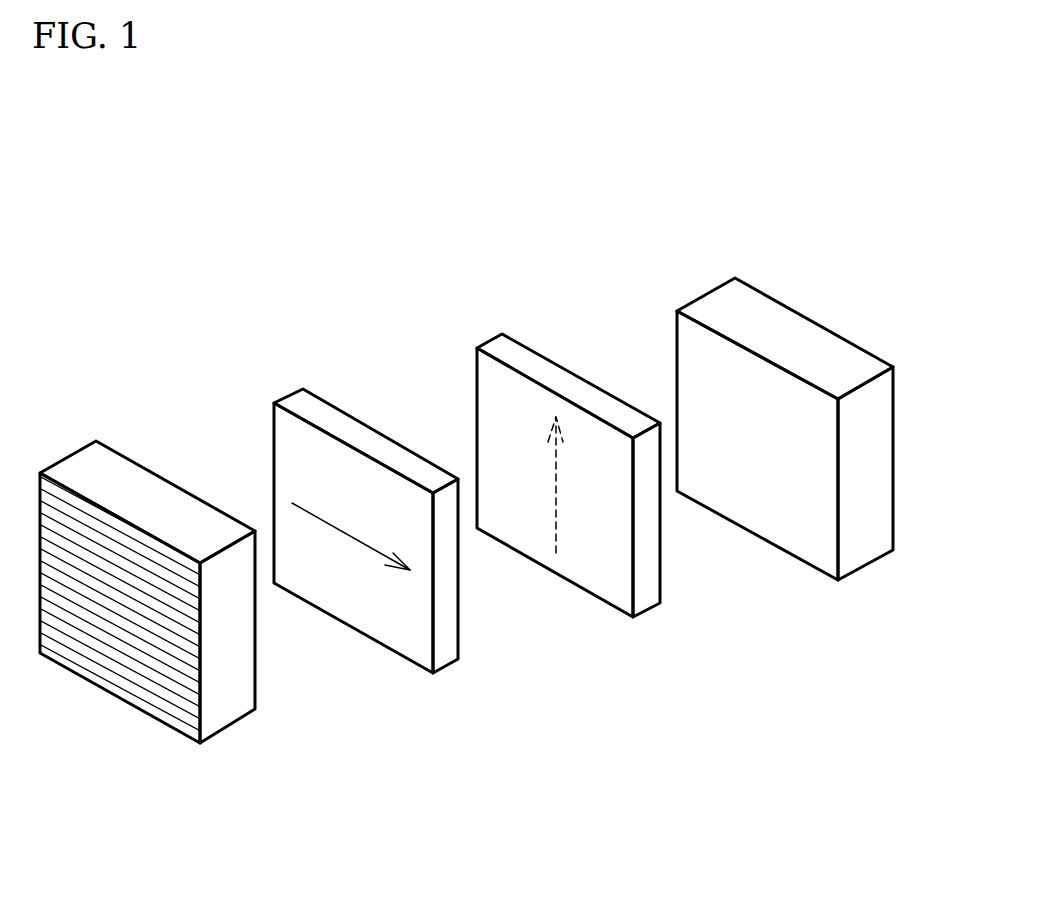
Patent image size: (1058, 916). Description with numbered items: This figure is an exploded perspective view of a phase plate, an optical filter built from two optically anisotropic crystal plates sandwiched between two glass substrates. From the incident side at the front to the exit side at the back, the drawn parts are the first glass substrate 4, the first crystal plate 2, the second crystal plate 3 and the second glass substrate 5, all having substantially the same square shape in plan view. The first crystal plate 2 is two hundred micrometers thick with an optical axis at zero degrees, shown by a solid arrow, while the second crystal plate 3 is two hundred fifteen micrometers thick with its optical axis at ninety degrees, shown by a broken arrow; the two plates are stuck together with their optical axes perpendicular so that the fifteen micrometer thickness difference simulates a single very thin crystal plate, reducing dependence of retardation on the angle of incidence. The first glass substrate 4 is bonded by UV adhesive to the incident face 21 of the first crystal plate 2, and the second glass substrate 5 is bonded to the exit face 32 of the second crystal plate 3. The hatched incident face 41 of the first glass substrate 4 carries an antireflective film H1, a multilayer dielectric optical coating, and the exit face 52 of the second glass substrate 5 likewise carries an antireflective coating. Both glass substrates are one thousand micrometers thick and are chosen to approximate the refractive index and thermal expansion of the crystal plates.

The first crystal plate 2 is at (390, 534).
The incident face 21 is at (297, 452).
The second crystal plate 3 is at (591, 465).
The exit face 32 is at (545, 358).
The first glass substrate 4 is at (142, 590).
The incident face 41 is at (130, 583).
The second glass substrate 5 is at (800, 413).
The exit face 52 is at (777, 298).
The antireflective film H1 is at (123, 667).